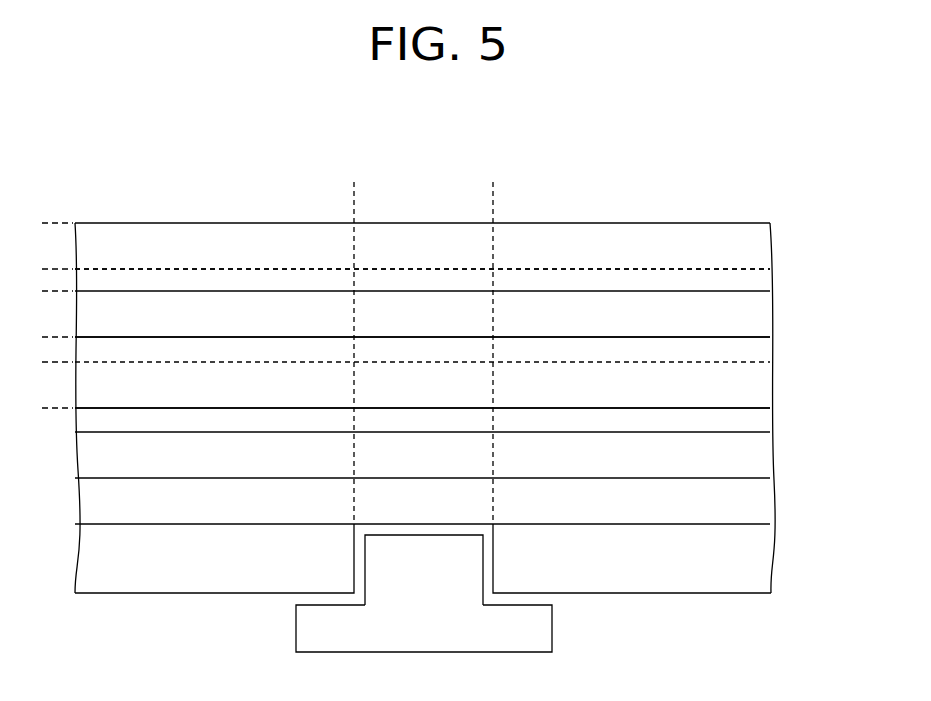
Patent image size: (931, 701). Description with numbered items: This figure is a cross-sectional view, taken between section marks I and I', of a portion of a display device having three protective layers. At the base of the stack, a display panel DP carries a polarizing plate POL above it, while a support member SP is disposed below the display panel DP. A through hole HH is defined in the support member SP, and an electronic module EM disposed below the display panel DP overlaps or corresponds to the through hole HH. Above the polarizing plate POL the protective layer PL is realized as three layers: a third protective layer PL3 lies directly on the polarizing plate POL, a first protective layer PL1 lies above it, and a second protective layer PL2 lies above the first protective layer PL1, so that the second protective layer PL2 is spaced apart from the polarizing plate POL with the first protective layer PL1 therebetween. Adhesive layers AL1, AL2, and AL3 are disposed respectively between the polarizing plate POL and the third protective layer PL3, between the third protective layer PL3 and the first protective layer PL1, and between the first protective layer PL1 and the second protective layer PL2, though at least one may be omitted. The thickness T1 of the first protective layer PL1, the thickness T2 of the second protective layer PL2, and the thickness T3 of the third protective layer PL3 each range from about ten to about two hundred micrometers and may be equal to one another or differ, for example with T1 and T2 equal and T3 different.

The through hole HH is at (492, 188).
The thickness of the second protective layer T2 is at (49, 223).
The thickness of the first protective layer T1 is at (49, 291).
The thickness of the third protective layer T3 is at (49, 362).
The protective layer PL is at (740, 155).
The first protective layer PL1 is at (642, 305).
The second protective layer PL2 is at (583, 233).
The third protective layer PL3 is at (707, 370).
The adhesive layer AL1 is at (762, 349).
The adhesive layer AL2 is at (762, 280).
The adhesive layer AL3 is at (762, 419).
The polarizing plate POL is at (762, 454).
The display panel DP is at (762, 500).
The support member SP is at (762, 556).
The electronic module EM is at (548, 624).
The section line start I is at (75, 611).
The section line end I' is at (771, 611).